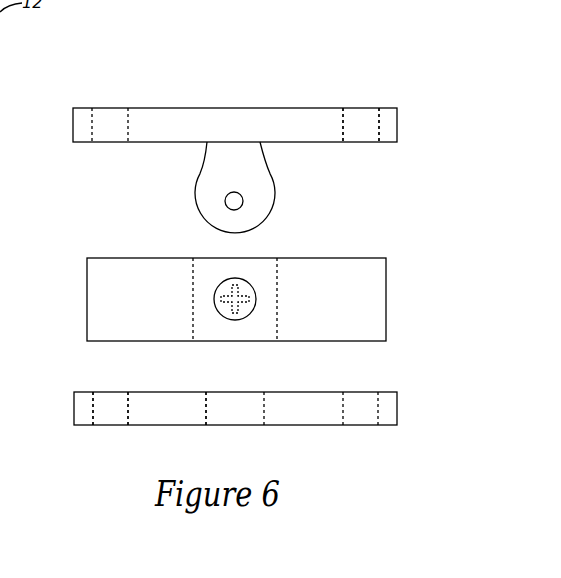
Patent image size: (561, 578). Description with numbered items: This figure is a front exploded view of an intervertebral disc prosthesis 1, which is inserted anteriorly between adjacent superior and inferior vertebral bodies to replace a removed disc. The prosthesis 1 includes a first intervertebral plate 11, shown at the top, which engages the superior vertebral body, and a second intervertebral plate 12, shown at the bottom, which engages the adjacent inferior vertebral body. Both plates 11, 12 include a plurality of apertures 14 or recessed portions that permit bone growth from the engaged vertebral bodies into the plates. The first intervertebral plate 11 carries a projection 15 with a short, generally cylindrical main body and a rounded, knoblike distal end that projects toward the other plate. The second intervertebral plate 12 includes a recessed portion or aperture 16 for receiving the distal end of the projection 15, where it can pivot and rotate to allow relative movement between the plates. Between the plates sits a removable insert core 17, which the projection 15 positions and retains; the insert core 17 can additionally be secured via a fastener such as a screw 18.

The intervertebral disc prosthesis 1 is at (138, 51).
The first intervertebral plate 11 is at (397, 128).
The second intervertebral plate 12 is at (74, 407).
The apertures 14 is at (378, 125).
The projection 15 is at (277, 191).
The aperture 16 is at (205, 409).
The removable insert core 17 is at (87, 298).
The screw 18 is at (221, 284).